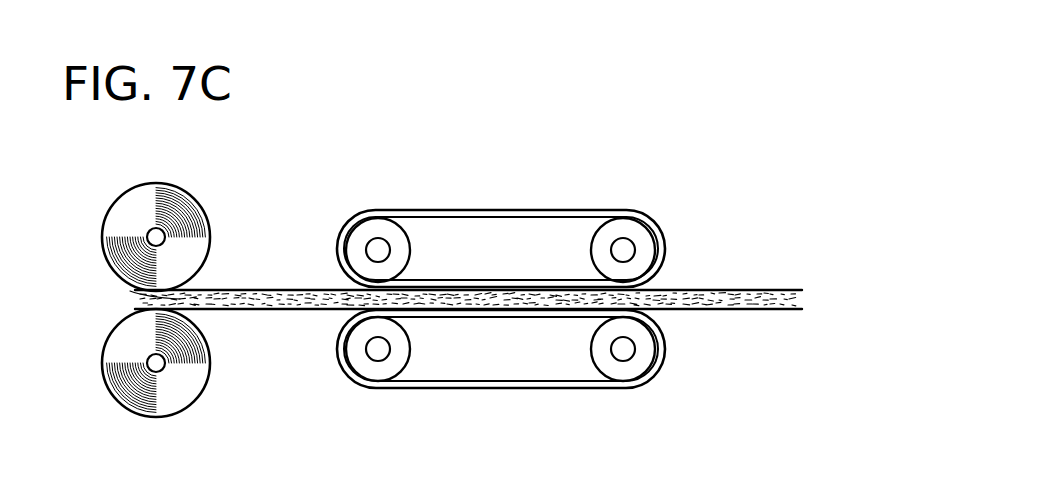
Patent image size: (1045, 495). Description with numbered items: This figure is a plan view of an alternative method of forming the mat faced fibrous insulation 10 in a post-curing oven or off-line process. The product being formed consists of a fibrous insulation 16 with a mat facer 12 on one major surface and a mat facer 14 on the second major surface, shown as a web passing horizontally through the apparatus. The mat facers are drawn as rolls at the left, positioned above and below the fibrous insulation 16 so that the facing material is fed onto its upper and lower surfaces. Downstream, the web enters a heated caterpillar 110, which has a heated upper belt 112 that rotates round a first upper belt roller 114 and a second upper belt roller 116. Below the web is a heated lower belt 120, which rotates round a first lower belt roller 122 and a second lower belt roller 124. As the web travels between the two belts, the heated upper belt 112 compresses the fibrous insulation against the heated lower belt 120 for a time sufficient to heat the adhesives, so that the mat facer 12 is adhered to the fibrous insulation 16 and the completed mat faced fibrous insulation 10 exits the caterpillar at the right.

The mat faced fibrous insulation 10 is at (752, 284).
The mat facer 12 is at (162, 219).
The mat facer 14 is at (167, 363).
The fibrous insulation 16 is at (150, 299).
The heated caterpillar 110 is at (522, 193).
The heated upper belt 112 is at (503, 208).
The first upper belt roller 114 is at (397, 230).
The second upper belt roller 116 is at (640, 232).
The heated lower belt 120 is at (501, 383).
The first lower belt roller 122 is at (398, 358).
The second lower belt roller 124 is at (608, 361).